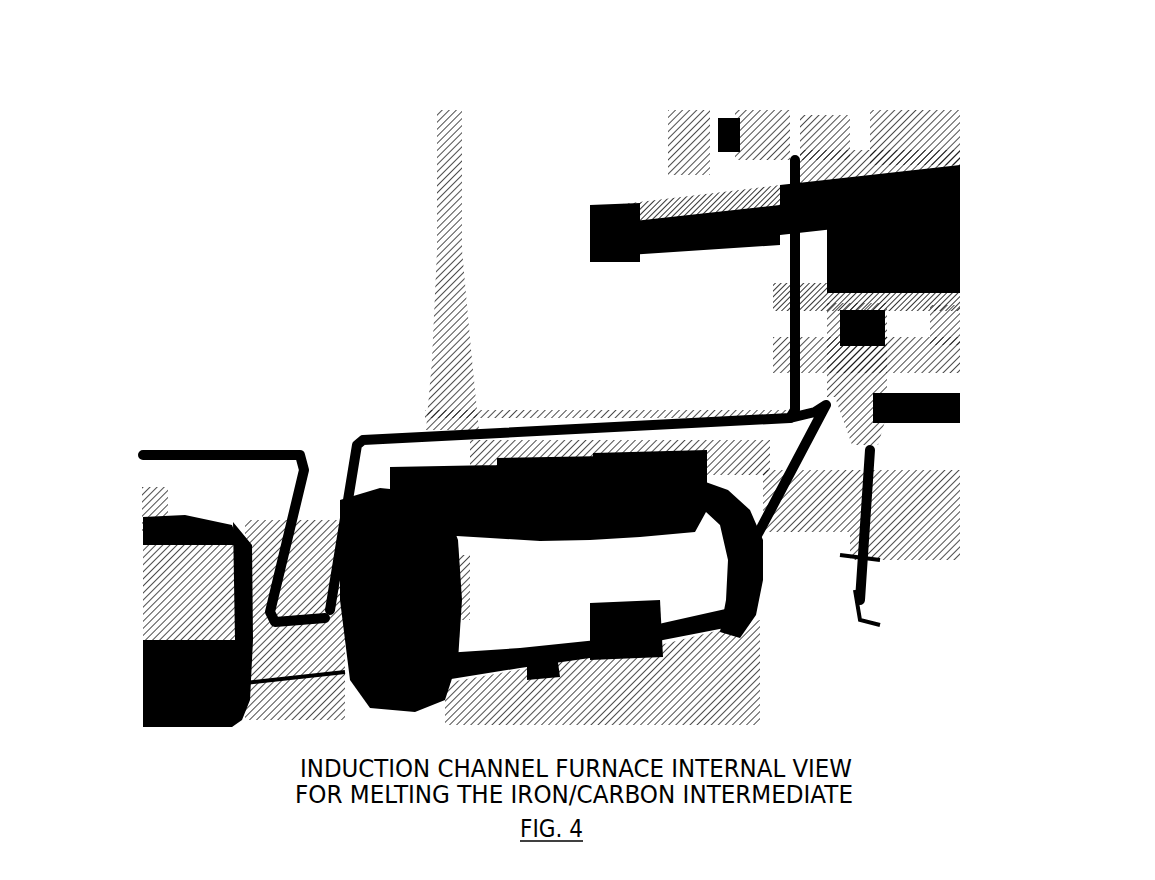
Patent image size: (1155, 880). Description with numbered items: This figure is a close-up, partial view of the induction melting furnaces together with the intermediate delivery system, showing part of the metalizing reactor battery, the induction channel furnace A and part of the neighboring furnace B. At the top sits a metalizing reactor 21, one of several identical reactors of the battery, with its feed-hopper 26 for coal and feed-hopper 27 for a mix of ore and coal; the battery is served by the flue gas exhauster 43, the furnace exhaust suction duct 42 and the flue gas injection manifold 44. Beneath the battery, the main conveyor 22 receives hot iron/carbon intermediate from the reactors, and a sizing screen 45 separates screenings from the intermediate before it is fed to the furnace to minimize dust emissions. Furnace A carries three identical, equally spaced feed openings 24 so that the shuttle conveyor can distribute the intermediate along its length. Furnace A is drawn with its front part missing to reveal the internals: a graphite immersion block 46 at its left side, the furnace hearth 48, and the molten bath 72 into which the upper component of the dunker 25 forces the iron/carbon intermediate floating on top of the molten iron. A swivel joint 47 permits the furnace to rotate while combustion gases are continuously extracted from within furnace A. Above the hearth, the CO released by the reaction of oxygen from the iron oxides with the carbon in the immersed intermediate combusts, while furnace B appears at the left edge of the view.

The feed-hopper 27 is at (684, 100).
The feed-hopper 26 is at (737, 100).
The exhauster 43 is at (791, 162).
The metalizing reactor 21 is at (710, 212).
The flue gas injection manifold 44 is at (916, 169).
The dunker 25 is at (412, 323).
The furnace exhaust suction duct 42 is at (655, 424).
The main conveyor 22 is at (962, 351).
The swivel joint 47 is at (329, 601).
The feed openings 24 is at (667, 454).
The sizing screen 45 is at (874, 443).
The induction channel furnace A is at (770, 565).
The molten bath 72 is at (665, 597).
The graphite immersion block 46 is at (489, 595).
The melting furnace B is at (170, 627).
The furnace hearth 48 is at (710, 606).